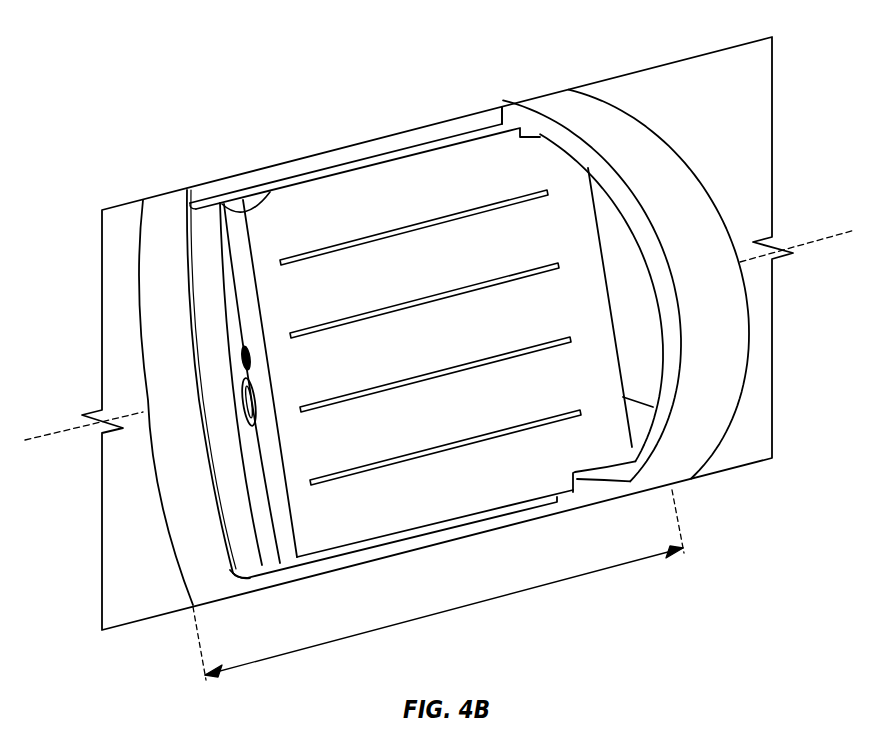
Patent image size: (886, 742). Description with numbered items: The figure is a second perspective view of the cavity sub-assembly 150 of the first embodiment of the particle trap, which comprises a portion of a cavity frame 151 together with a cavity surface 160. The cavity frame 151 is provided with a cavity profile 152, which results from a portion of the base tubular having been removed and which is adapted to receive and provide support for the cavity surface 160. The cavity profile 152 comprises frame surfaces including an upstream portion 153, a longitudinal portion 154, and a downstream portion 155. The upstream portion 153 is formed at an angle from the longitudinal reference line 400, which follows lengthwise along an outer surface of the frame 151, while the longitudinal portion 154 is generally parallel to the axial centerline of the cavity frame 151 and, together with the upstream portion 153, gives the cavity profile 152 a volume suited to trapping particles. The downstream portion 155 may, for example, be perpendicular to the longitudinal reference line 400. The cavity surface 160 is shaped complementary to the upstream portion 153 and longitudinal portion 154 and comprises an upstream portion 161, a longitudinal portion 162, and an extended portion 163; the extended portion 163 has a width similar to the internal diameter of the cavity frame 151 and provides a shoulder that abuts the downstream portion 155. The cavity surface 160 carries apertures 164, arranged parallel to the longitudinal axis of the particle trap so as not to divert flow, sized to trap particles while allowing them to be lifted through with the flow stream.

The cavity sub-assembly 150 is at (517, 597).
The cavity frame 151 is at (162, 193).
The cavity profile 152 is at (350, 160).
The cavity profile upstream portion 153 is at (243, 578).
The cavity profile longitudinal portion 154 is at (503, 513).
The cavity profile downstream portion 155 is at (617, 488).
The cavity surface 160 is at (438, 170).
The cavity surface upstream portion 161 is at (230, 210).
The cavity surface longitudinal portion 162 is at (500, 150).
The cavity surface extended portion 163 is at (540, 142).
The apertures 164 is at (383, 231).
The longitudinal reference line 400 is at (812, 241).